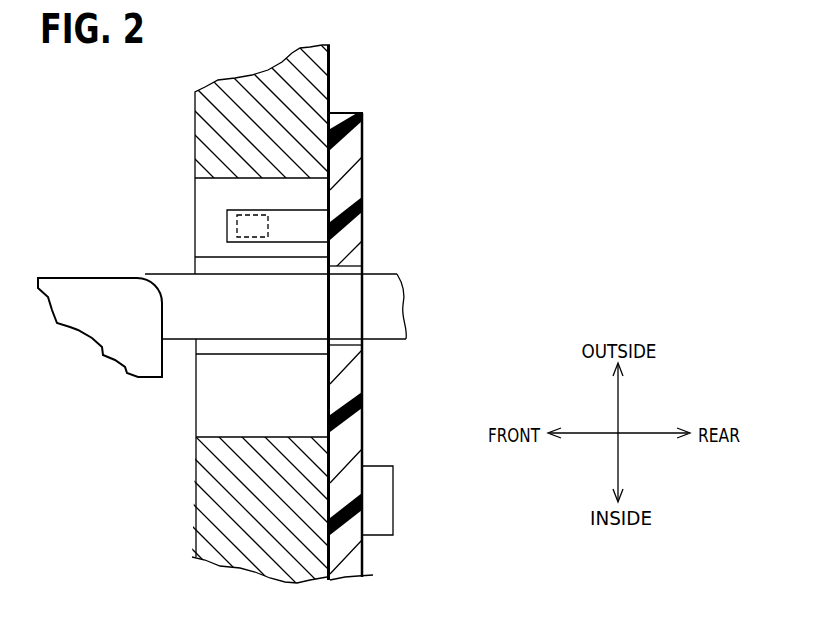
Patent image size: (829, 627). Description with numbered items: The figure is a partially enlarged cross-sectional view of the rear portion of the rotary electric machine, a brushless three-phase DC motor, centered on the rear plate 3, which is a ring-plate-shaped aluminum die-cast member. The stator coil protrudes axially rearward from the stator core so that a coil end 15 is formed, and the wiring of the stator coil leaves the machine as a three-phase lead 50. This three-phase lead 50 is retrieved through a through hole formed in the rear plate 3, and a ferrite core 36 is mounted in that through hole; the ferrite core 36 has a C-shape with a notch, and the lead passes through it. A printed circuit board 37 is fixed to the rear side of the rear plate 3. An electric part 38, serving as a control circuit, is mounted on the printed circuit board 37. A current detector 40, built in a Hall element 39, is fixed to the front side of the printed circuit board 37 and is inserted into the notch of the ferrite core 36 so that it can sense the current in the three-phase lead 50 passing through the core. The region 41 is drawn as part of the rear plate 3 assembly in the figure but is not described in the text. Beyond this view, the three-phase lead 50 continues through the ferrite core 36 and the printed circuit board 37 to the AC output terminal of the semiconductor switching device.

The rear plate 3 is at (203, 127).
The coil end 15 is at (78, 297).
The ferrite core 36 is at (187, 398).
The printed circuit board 37 is at (357, 225).
The electric part 38 is at (384, 492).
The Hall element 39 is at (260, 222).
The current detector 40 is at (307, 218).
The base portion 41 is at (213, 197).
The three-phase lead 50 is at (175, 288).